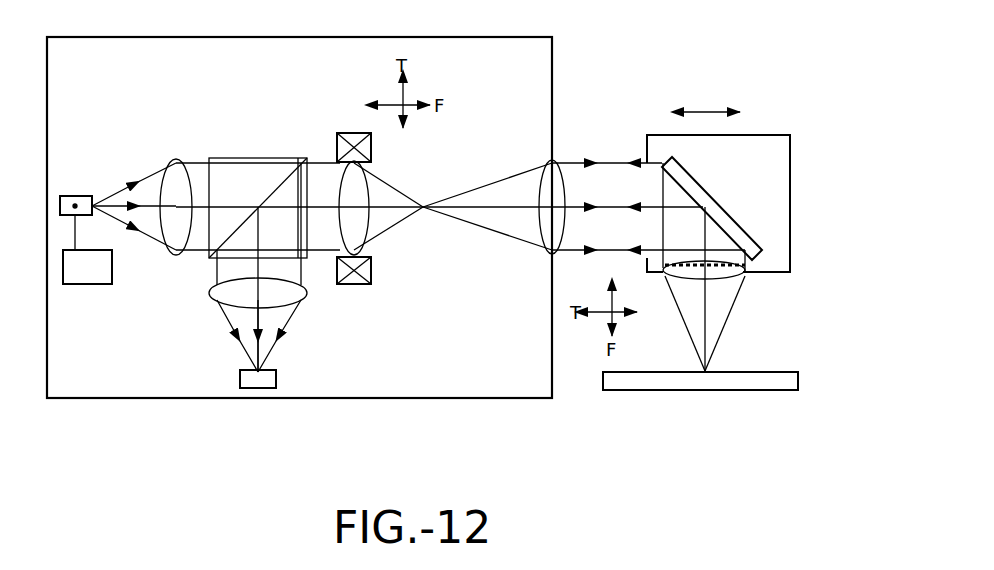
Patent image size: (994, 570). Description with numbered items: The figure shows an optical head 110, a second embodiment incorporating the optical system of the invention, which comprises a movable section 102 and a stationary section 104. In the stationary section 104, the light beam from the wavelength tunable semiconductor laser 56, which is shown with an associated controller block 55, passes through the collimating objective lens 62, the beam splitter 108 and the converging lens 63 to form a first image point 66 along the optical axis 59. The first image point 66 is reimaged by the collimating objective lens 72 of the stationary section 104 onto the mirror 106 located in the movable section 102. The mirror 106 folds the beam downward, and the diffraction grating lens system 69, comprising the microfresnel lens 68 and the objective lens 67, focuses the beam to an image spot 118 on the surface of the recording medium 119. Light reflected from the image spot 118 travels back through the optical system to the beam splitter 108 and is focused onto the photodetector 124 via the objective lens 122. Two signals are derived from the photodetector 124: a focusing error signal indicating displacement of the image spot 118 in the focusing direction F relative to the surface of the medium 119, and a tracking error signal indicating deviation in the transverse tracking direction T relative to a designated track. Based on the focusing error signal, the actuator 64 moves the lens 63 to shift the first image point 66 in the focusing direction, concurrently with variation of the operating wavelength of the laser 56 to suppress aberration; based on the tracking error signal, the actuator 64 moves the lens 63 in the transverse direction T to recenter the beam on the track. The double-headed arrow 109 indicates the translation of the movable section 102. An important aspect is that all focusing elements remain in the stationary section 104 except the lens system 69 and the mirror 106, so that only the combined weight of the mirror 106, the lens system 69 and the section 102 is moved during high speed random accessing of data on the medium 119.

The laser controller 55 is at (87, 249).
The wavelength tunable semiconductor laser 56 is at (76, 196).
The optical axis 59 is at (505, 208).
The collimating objective lens 62 is at (172, 160).
The converging lens 63 is at (372, 245).
The actuator 64 is at (354, 284).
The first image point 66 is at (423, 207).
The objective lens 67 is at (745, 273).
The microfresnel lens 68 is at (745, 266).
The diffraction grating lens system 69 is at (775, 254).
The collimating objective lens 72 is at (553, 163).
The movable section 102 is at (790, 135).
The stationary section 104 is at (467, 399).
The mirror 106 is at (722, 210).
The beam splitter 108 is at (252, 158).
The tracking movement direction 109 is at (718, 112).
The optical head 110 is at (670, 60).
The image spot 118 is at (708, 369).
The recording medium 119 is at (770, 391).
The objective lens 122 is at (212, 292).
The photodetector 124 is at (240, 378).